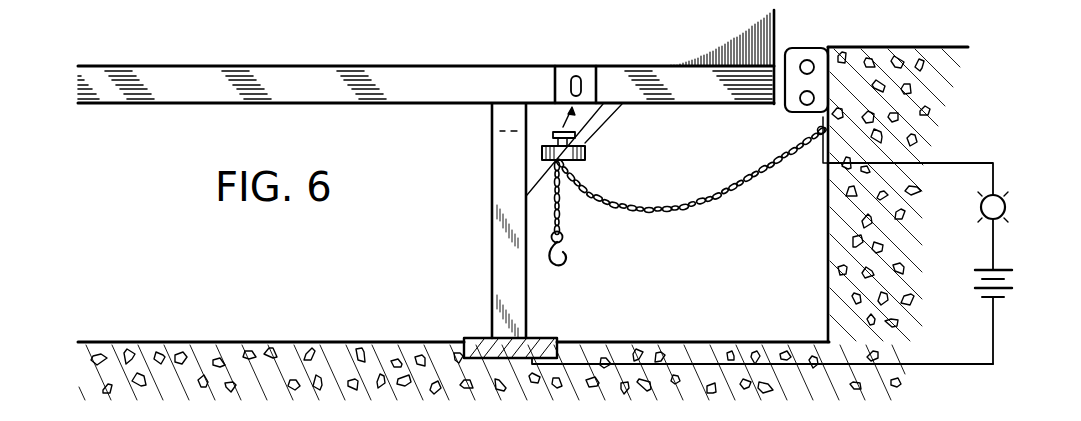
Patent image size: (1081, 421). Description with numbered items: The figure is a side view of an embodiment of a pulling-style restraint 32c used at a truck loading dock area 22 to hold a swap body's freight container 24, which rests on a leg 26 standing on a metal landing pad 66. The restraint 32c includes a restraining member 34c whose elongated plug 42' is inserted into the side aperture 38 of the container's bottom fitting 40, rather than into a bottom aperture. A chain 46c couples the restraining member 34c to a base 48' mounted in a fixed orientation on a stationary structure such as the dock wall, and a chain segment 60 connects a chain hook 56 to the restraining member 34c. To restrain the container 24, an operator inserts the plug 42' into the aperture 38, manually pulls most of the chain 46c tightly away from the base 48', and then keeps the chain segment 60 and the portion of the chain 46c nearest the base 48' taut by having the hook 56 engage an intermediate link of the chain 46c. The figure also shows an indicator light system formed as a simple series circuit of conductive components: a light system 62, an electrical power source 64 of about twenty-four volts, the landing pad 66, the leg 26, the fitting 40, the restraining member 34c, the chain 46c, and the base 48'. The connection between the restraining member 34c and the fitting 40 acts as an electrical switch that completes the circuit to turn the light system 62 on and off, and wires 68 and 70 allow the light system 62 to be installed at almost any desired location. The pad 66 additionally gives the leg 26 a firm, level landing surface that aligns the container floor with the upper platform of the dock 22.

The truck loading dock area 22 is at (878, 47).
The freight container 24 is at (776, 33).
The leg 26 is at (492, 225).
The restraint 32c is at (511, 165).
The restraining member 34c is at (585, 155).
The side aperture 38 is at (571, 88).
The bottom fitting 40 is at (598, 92).
The elongated plug 42' is at (501, 126).
The chain 46c is at (764, 173).
The base 48' is at (785, 140).
The chain hook 56 is at (552, 264).
The chain segment 60 is at (560, 208).
The light system 62 is at (1006, 207).
The electrical power source 64 is at (1000, 268).
The metal landing pad 66 is at (470, 338).
The wire 68 is at (934, 364).
The wire 70 is at (955, 163).